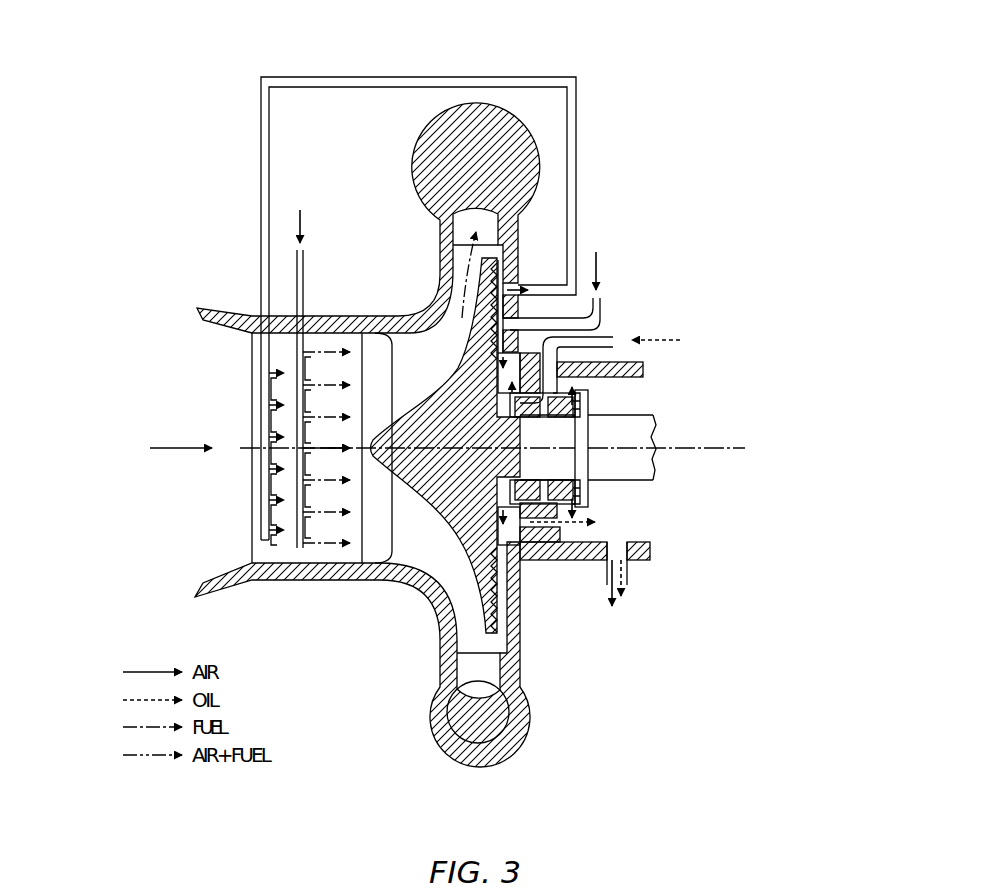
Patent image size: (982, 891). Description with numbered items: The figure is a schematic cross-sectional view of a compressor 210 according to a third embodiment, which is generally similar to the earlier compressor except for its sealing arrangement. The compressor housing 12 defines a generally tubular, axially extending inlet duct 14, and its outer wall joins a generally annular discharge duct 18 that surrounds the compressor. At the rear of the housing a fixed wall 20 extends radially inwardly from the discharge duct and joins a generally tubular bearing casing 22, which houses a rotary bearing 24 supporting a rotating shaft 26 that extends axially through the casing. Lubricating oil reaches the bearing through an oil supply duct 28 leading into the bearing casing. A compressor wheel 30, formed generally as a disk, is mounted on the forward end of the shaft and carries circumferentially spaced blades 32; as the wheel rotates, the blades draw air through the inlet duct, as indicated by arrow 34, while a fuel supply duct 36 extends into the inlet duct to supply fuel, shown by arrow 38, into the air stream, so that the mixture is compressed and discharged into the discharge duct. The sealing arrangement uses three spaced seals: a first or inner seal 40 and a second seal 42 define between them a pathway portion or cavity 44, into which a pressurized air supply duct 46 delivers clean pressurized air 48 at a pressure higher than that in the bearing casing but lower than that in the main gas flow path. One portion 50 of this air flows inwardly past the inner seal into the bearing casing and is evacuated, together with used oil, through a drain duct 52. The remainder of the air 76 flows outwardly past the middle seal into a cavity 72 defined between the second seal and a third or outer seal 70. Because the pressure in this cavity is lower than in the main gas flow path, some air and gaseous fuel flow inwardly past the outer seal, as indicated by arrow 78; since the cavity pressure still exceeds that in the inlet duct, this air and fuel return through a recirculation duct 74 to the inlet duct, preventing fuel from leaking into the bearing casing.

The compressor 210 is at (208, 100).
The compressor housing 12 is at (259, 583).
The inlet duct 14 is at (349, 317).
The discharge duct 18 is at (433, 737).
The fixed wall 20 is at (518, 648).
The bearing casing 22 is at (643, 371).
The rotary bearing 24 is at (590, 486).
The shaft 26 is at (637, 430).
The oil supply duct 28 is at (603, 338).
The compressor wheel 30 is at (445, 493).
The blades 32 is at (448, 568).
The arrow 34 is at (152, 444).
The fuel supply duct 36 is at (295, 522).
The arrow 38 is at (303, 237).
The first or inner seal 40 is at (600, 522).
The second seal 42 is at (505, 592).
The pathway portion or cavity 44 is at (505, 570).
The pressurized air supply duct 46 is at (601, 304).
The clean pressurized air 48 is at (503, 352).
The portion of pressurized air 50 is at (596, 292).
The drain duct 52 is at (622, 570).
The third or outer seal 70 is at (505, 617).
The cavity 72 is at (505, 605).
The recirculation duct 74 is at (261, 245).
The remainder of the air 76 is at (520, 284).
The arrow 78 is at (505, 262).